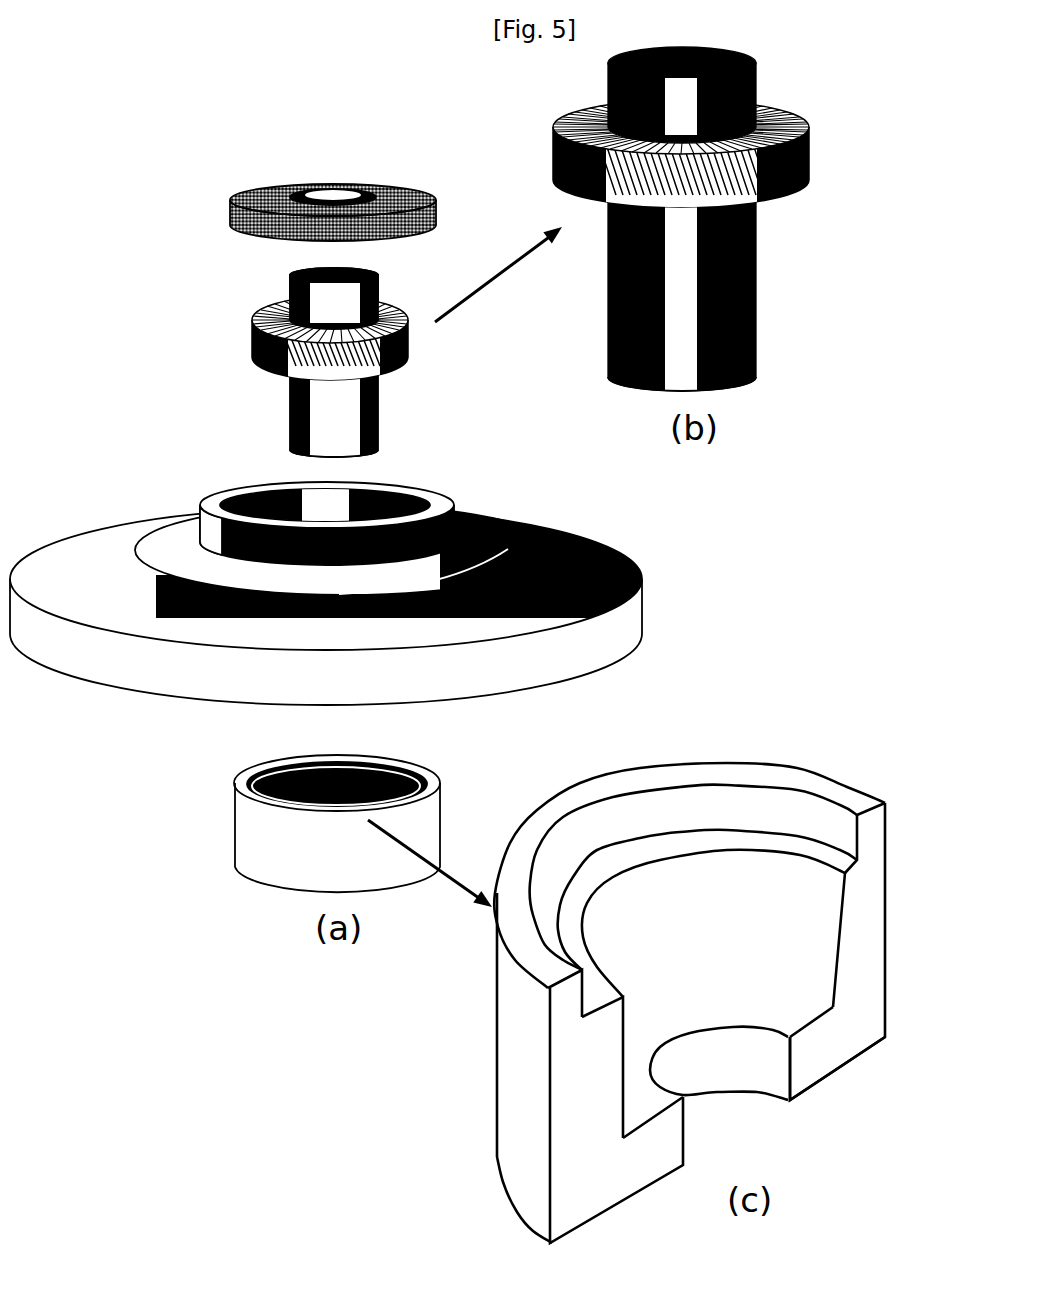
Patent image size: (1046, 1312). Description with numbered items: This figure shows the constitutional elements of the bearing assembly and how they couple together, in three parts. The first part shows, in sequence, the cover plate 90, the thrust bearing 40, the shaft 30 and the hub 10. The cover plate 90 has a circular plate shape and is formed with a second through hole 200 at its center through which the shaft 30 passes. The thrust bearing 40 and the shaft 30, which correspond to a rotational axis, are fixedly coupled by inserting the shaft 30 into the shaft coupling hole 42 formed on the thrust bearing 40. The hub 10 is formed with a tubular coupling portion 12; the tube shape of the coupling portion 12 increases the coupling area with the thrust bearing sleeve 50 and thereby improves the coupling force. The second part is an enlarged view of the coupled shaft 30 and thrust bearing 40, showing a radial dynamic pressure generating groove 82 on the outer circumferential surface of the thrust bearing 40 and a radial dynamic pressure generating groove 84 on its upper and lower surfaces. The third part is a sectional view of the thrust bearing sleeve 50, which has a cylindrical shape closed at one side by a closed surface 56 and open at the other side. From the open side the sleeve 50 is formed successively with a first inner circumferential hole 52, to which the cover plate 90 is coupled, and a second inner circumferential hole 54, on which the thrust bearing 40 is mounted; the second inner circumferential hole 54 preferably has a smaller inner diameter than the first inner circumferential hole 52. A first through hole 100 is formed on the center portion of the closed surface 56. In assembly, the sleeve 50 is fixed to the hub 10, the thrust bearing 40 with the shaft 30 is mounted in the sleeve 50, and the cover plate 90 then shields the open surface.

The hub 10 is at (642, 581).
The coupling portion 12 is at (197, 515).
The shaft 30 is at (283, 407).
The thrust bearing 40 is at (247, 347).
The shaft coupling hole 42 is at (287, 306).
The thrust bearing sleeve 50 is at (253, 824).
The first inner circumferential hole 52 is at (600, 845).
The second inner circumferential hole 54 is at (690, 993).
The closed surface 56 is at (807, 1072).
The radial dynamic pressure generating groove 82 is at (810, 165).
The radial dynamic pressure generating groove 84 is at (797, 108).
The cover plate 90 is at (247, 212).
The first through hole 100 is at (703, 1070).
The second through hole 200 is at (307, 190).